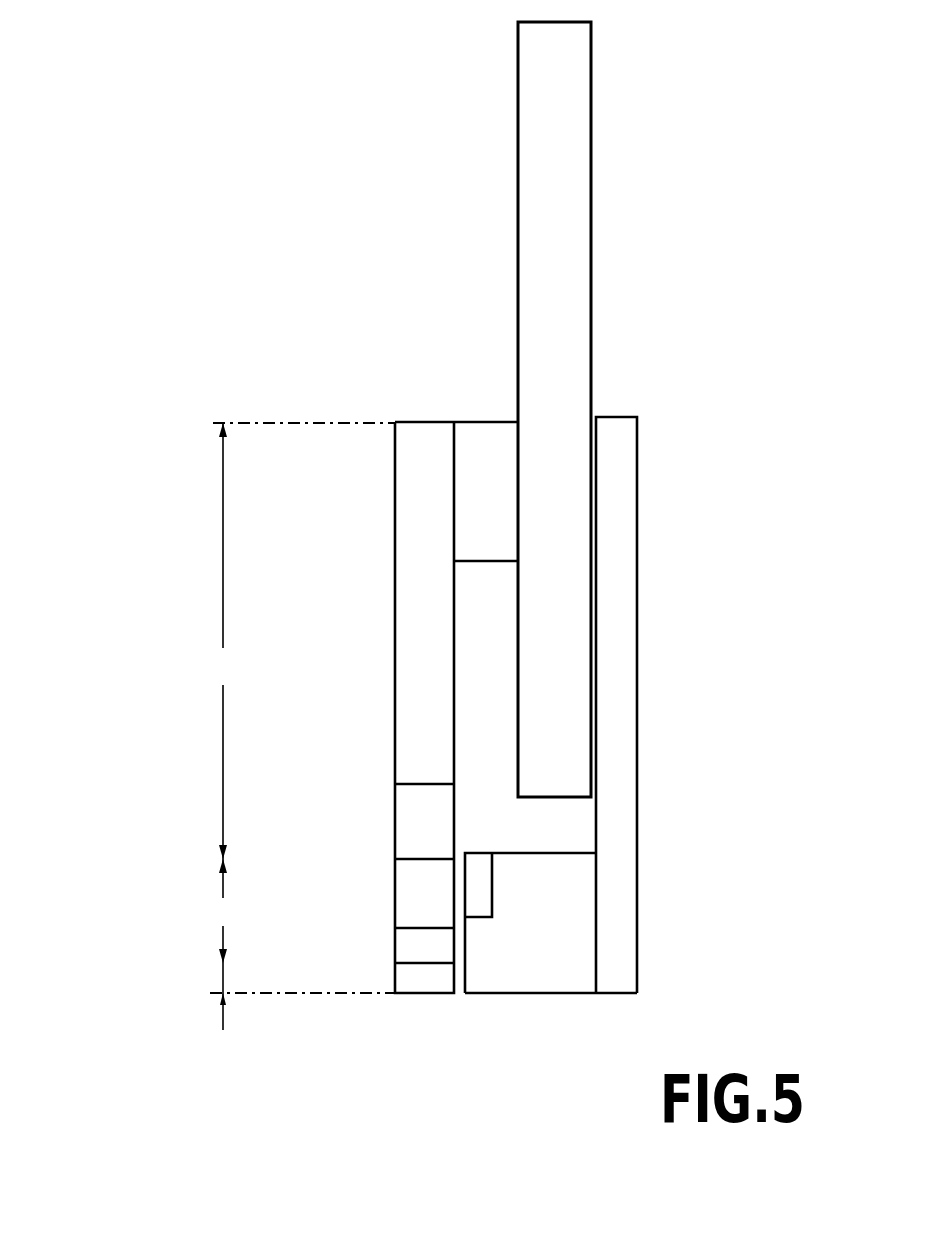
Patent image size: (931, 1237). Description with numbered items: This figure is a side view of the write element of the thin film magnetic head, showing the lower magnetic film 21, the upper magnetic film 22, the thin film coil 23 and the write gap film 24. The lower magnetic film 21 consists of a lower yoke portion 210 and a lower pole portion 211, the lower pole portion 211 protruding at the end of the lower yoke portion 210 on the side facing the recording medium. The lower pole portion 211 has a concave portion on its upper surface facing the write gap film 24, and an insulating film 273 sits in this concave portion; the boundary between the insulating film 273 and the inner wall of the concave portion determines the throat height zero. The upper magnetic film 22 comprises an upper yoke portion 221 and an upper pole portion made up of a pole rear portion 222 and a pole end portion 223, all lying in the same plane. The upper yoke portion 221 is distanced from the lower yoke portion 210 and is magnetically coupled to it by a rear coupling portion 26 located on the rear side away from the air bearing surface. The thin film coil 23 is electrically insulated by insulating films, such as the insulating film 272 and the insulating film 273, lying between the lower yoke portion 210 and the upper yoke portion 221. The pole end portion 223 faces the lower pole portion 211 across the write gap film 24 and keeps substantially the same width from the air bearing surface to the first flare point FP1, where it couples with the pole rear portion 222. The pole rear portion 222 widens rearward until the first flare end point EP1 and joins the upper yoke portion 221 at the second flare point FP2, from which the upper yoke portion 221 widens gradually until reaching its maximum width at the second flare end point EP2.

The lower magnetic film 21 is at (604, 688).
The upper magnetic film 22 is at (420, 707).
The thin film coil 23 is at (578, 317).
The write gap film 24 is at (458, 980).
The rear coupling portion 26 is at (495, 515).
The lower yoke portion 210 is at (613, 655).
The lower pole portion 211 is at (560, 969).
The insulating film 272 is at (459, 815).
The insulating film 273 is at (483, 888).
The upper yoke portion 221 is at (296, 641).
The pole rear portion 222 is at (221, 911).
The pole end portion 223 is at (220, 977).
The first flare end point EP1 is at (395, 928).
The second flare end point EP2 is at (395, 784).
The first flare point FP1 is at (395, 963).
The second flare point FP2 is at (395, 859).